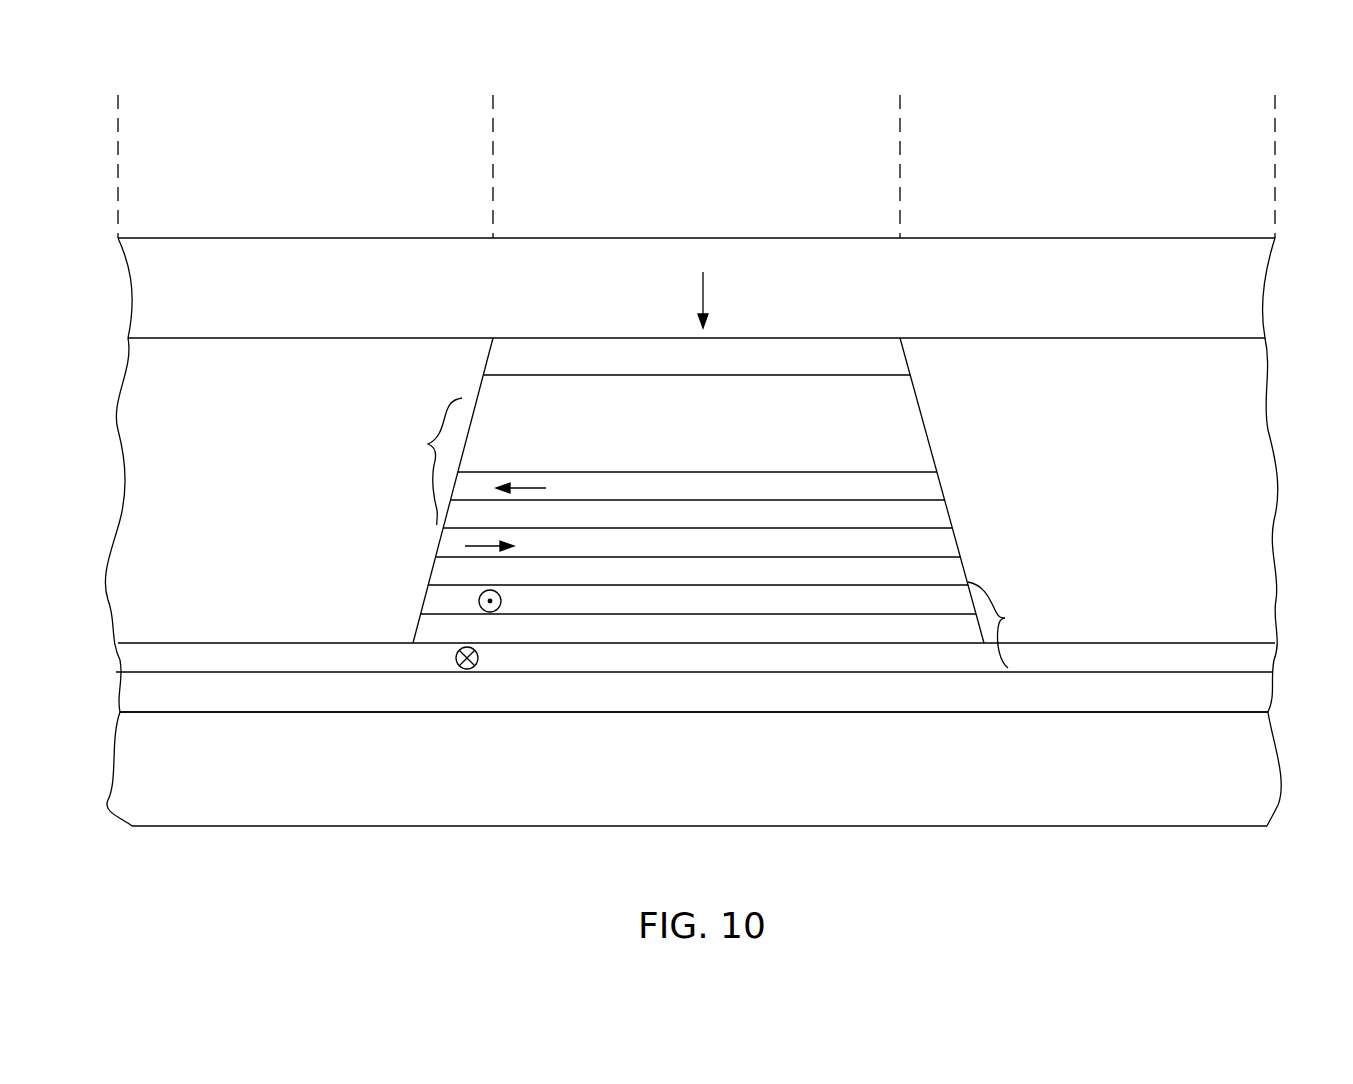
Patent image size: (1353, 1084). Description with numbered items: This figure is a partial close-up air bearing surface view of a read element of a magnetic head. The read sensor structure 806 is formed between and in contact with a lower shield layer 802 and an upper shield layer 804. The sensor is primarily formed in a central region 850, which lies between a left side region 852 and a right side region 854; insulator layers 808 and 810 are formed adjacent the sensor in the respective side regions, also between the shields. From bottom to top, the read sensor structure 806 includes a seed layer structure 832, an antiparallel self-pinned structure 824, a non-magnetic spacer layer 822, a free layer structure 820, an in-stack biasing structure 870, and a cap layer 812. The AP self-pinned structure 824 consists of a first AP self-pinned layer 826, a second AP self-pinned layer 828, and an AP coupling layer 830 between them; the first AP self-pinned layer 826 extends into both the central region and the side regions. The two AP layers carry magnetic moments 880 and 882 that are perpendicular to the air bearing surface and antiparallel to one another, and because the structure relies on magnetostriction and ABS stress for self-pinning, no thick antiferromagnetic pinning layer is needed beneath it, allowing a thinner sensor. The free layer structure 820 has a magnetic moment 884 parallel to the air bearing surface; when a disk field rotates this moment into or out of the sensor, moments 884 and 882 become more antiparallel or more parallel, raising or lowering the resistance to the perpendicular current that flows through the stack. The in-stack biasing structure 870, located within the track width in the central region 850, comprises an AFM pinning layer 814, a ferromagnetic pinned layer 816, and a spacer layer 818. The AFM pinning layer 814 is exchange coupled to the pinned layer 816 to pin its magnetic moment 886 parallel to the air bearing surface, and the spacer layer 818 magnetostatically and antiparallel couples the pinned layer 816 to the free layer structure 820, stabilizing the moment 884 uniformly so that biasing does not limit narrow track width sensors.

The lower shield layer 802 is at (1076, 803).
The upper shield layer 804 is at (1143, 272).
The read sensor structure 806 is at (392, 380).
The insulator layer 808 is at (182, 424).
The insulator layer 810 is at (1210, 425).
The cap layer 812 is at (870, 360).
The antiferromagnetic (AFM) pinning layer 814 is at (882, 406).
The ferromagnetic (FM) pinned layer 816 is at (908, 486).
The non-magnetic material spacer layer 818 is at (916, 514).
The free layer structure 820 is at (925, 544).
The non-magnetic material spacer layer 822 is at (933, 572).
The antiparallel (AP) self-pinned structure 824 is at (1082, 617).
The first AP self-pinned layer 826 is at (143, 657).
The second AP self-pinned layer 828 is at (447, 598).
The AP coupling (APC) layer 830 is at (440, 626).
The seed layer structure 832 is at (137, 695).
The central region 850 is at (780, 166).
The left side region 852 is at (305, 166).
The right side region 854 is at (1163, 166).
The in-stack biasing structure 870 is at (380, 458).
The magnetic moment 880 is at (457, 666).
The magnetic moment 882 is at (480, 604).
The magnetic moment 884 is at (468, 546).
The magnetic moment 886 is at (522, 488).